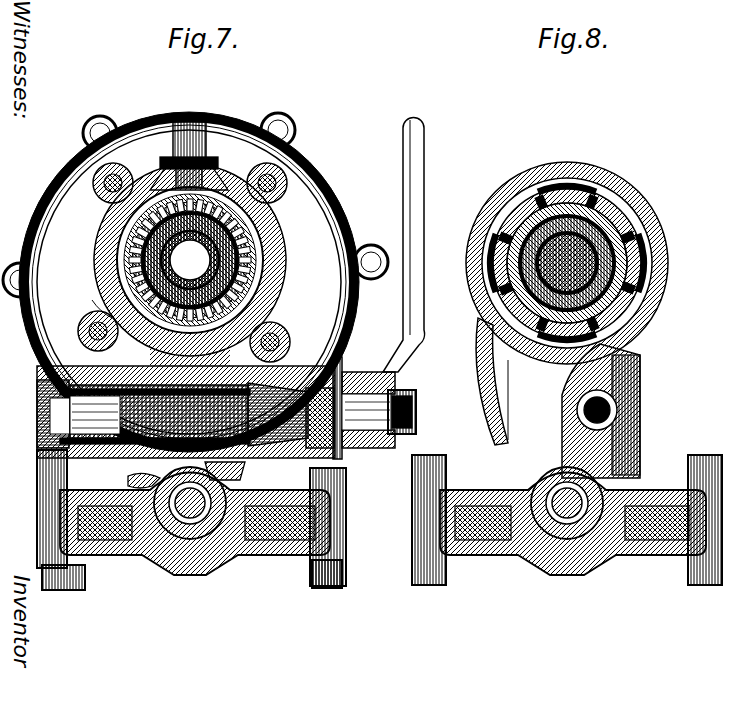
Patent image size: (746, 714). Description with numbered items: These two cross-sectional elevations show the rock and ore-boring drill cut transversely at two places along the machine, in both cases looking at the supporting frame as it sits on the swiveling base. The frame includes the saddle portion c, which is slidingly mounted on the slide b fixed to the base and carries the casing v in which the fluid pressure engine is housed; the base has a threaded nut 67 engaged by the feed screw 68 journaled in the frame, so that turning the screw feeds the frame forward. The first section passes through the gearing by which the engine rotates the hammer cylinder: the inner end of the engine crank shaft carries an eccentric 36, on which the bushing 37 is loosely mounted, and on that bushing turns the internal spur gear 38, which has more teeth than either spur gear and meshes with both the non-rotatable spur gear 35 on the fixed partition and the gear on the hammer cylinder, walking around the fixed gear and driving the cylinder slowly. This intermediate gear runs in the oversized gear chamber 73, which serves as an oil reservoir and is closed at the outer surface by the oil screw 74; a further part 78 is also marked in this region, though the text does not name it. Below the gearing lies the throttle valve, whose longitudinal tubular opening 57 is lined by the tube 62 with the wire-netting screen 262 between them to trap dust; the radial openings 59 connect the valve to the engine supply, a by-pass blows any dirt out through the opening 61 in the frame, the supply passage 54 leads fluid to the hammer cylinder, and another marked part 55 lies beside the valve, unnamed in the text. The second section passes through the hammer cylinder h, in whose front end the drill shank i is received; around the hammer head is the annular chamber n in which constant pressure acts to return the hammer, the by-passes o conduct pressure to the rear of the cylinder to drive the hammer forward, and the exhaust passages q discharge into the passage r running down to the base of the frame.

In FIG. 7, the oil screw 74 is at (184, 122).
In FIG. 7, the casing v is at (239, 115).
In FIG. 7, the non-rotatable spur gear 35 is at (245, 232).
In FIG. 7, the bushing 37 is at (215, 265).
In FIG. 7, the eccentric 36 is at (190, 260).
In FIG. 7, the internal spur gear 38 is at (122, 242).
In FIG. 7, the gear chamber 73 is at (110, 300).
In FIG. 7, the opening 61 is at (337, 318).
In FIG. 7, the plate boss 78 is at (190, 351).
In FIG. 7, the longitudinal tubular opening 57 is at (155, 414).
In FIG. 7, the tube 62 is at (265, 432).
In FIG. 7, the screen 262 is at (44, 447).
In FIG. 7, the stop lug 55 is at (144, 484).
In FIG. 7, the radial openings 59 is at (225, 470).
In FIG. 7, the saddle portion c is at (36, 503).
In FIG. 8, the saddle portion c is at (412, 521).
In FIG. 7, the slide b is at (196, 523).
In FIG. 8, the slide b is at (563, 334).
In FIG. 7, the threaded nut 67 is at (180, 542).
In FIG. 8, the threaded nut 67 is at (556, 542).
In FIG. 7, the feed screw 68 is at (200, 522).
In FIG. 8, the feed screw 68 is at (578, 522).
In FIG. 8, the by-passes o is at (563, 190).
In FIG. 8, the exhaust passages q is at (625, 214).
In FIG. 8, the annular chamber n is at (605, 248).
In FIG. 8, the hammer cylinder h is at (618, 290).
In FIG. 8, the shank i is at (567, 263).
In FIG. 8, the passage r is at (522, 400).
In FIG. 8, the passage 54 is at (604, 412).